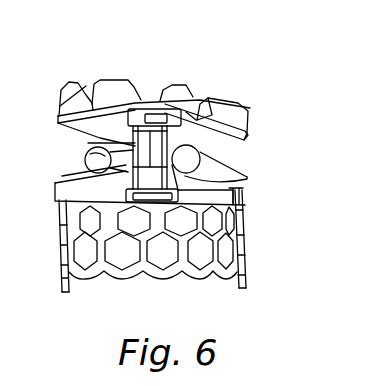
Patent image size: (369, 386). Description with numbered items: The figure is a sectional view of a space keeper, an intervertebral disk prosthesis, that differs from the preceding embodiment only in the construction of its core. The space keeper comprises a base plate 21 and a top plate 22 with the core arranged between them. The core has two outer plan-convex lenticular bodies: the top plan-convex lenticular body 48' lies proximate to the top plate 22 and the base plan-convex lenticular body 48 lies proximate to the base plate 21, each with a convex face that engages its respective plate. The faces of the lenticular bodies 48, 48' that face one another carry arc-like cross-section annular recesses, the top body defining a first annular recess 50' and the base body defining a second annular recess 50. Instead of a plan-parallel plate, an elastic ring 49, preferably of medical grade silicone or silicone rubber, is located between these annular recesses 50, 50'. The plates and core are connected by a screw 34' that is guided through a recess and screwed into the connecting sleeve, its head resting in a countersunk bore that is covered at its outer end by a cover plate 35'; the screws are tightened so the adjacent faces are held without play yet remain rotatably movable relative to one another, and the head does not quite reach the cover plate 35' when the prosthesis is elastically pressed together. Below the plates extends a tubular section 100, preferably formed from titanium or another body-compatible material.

The first annular recess 50' is at (101, 78).
The cover plate 35' is at (152, 125).
The screw 34' is at (194, 99).
The top plan-convex lenticular body 48' is at (254, 92).
The top plate 22 is at (247, 128).
The ring 49 is at (200, 159).
The base plan-convex lenticular body 48 is at (277, 199).
The second annular recess 50 is at (76, 166).
The base plate 21 is at (88, 197).
The tubular section 100 is at (240, 253).